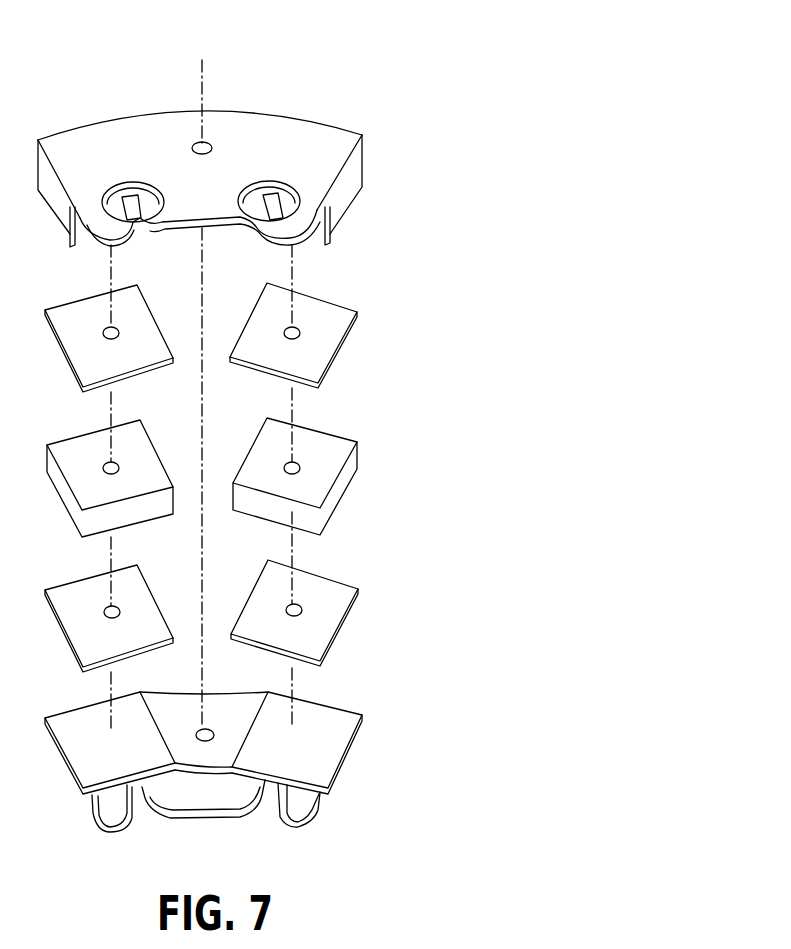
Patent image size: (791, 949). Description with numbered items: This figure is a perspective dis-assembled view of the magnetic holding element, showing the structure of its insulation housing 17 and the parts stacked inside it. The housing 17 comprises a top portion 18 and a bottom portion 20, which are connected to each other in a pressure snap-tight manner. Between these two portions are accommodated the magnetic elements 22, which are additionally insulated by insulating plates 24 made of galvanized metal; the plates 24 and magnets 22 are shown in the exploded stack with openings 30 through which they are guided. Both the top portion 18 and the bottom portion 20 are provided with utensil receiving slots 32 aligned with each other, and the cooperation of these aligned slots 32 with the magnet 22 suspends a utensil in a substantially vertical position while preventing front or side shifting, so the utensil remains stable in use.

The insulation housing 17 is at (146, 72).
The top portion 18 is at (322, 157).
The bottom portion 20 is at (327, 745).
The magnetic element 22 is at (345, 478).
The insulating plate 24 is at (325, 352).
The hole 30 is at (294, 326).
The utensil receiving slot 32 is at (133, 803).